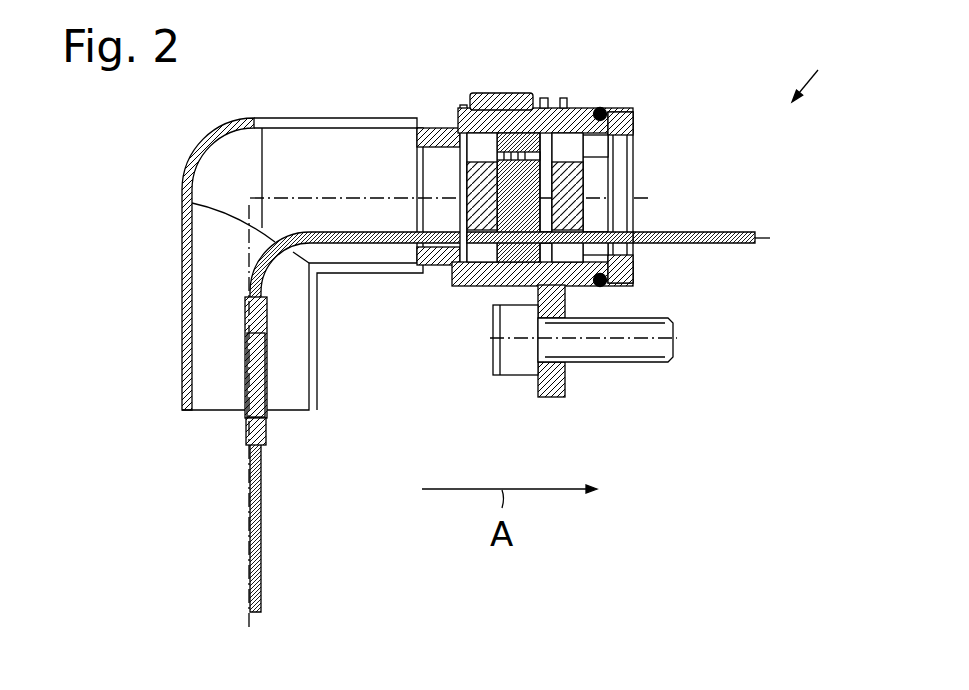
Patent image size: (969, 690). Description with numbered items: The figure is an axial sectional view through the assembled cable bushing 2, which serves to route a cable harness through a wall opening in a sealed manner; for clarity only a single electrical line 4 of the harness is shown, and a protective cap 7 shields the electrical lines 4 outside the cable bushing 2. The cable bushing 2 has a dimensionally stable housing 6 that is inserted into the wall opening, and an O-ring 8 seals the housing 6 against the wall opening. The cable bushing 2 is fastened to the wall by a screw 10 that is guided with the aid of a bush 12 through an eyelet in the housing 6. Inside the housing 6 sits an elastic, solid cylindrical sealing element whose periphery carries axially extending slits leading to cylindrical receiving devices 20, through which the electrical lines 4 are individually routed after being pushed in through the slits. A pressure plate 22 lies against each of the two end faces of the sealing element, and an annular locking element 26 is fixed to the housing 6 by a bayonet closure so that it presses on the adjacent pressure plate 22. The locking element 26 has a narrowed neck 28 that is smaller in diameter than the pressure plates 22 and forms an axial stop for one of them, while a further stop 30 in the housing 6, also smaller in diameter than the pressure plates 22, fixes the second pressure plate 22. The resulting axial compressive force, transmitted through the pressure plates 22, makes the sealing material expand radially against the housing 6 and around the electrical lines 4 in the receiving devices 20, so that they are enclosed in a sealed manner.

The cable bushing 2 is at (858, 72).
The electrical line 4 is at (265, 258).
The housing 6 is at (575, 117).
The protective cap 7 is at (205, 147).
The O-ring 8 is at (598, 107).
The screw 10 is at (613, 348).
The bush 12 is at (537, 365).
The receiving device 20 is at (507, 143).
The pressure plate 22 is at (570, 180).
The locking element 26 is at (483, 95).
The neck 28 is at (445, 127).
The stop 30 is at (588, 140).